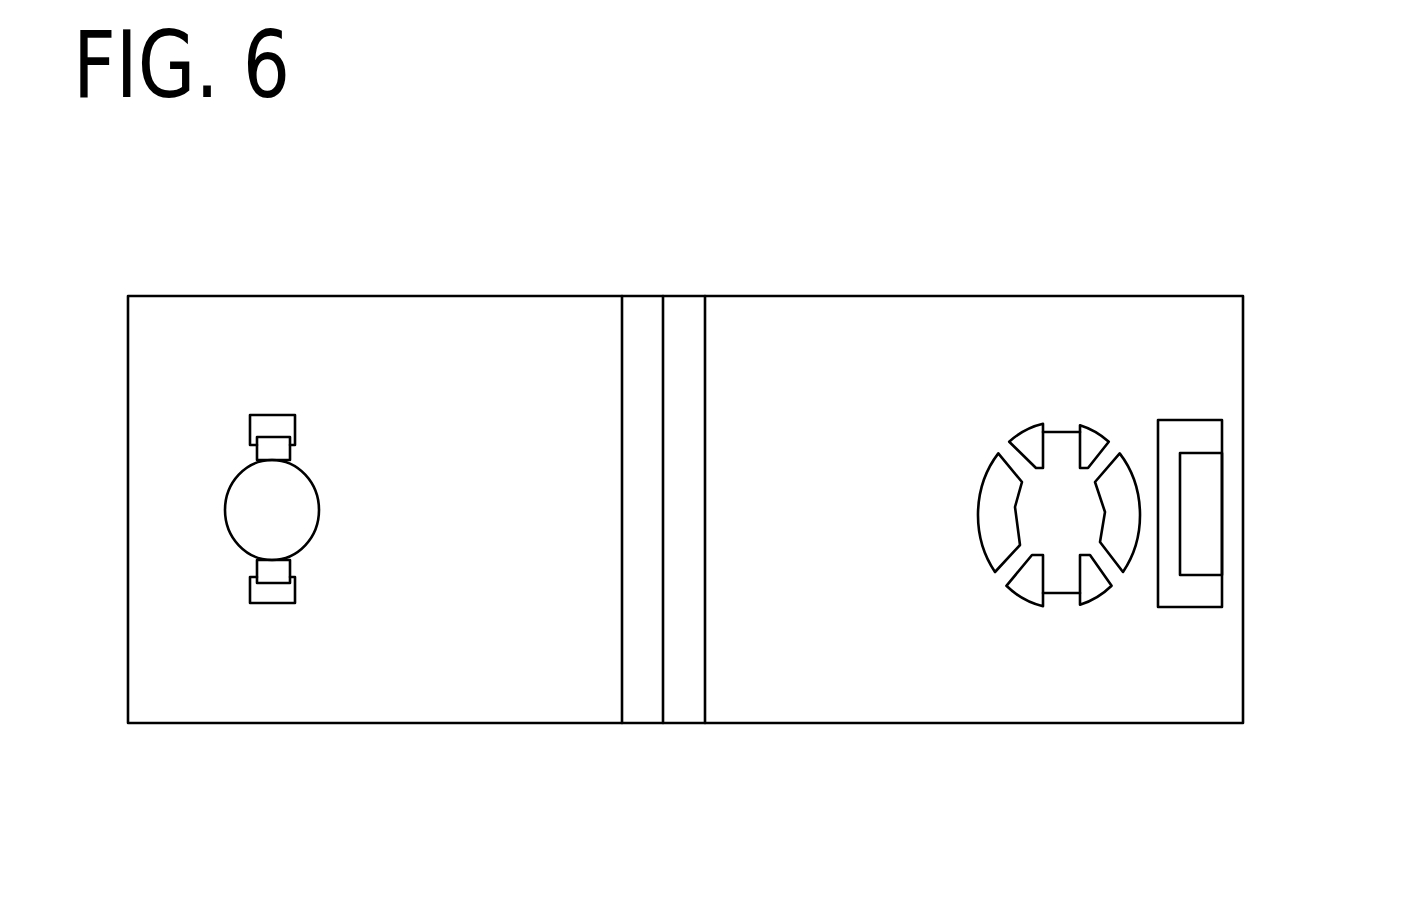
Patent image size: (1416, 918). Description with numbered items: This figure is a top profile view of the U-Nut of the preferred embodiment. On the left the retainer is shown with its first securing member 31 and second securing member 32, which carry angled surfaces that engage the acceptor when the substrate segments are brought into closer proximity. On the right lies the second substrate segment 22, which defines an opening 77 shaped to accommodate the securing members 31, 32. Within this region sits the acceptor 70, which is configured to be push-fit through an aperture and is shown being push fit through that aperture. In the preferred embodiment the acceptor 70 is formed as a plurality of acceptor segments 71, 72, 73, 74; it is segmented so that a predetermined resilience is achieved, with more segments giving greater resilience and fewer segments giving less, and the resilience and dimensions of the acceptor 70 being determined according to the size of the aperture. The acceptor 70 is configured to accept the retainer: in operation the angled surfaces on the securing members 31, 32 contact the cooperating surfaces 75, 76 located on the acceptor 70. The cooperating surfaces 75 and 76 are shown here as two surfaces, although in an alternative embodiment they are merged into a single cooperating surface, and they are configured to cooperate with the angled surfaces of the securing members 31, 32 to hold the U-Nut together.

The second substrate segment 22 is at (553, 403).
The first securing member 31 is at (271, 573).
The second securing member 32 is at (271, 448).
The acceptor 70 is at (1122, 551).
The acceptor segment 71 is at (1028, 445).
The acceptor segment 72 is at (1132, 537).
The acceptor segment 73 is at (1027, 577).
The acceptor segment 74 is at (990, 515).
The cooperating surface 75 is at (1063, 430).
The cooperating surface 76 is at (1063, 597).
The opening 77 is at (1068, 523).